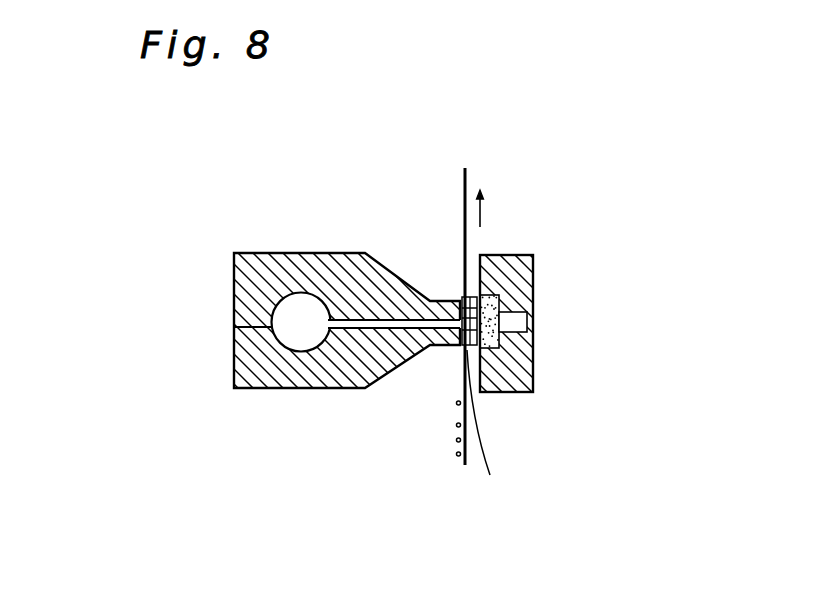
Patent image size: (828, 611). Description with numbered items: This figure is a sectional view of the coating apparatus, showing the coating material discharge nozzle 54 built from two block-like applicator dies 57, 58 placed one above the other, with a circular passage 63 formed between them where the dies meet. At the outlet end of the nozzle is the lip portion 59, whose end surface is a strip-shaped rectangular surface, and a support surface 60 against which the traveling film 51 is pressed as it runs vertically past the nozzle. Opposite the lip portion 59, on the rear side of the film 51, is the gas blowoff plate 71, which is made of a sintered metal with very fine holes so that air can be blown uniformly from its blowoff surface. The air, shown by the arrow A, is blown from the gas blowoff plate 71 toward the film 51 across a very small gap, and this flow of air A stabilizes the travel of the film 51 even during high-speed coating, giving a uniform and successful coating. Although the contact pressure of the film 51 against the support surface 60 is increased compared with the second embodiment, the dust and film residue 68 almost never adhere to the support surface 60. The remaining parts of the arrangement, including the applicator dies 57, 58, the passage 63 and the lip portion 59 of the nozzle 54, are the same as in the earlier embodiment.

The coating material discharge nozzle 54 is at (342, 328).
The block-like applicator die 57 is at (235, 277).
The block-like applicator die 58 is at (288, 380).
The circular channel 63 is at (288, 330).
The lip portion 59 is at (457, 298).
The support surface 60 is at (460, 296).
The film 51 is at (467, 172).
The gas blowoff plate 71 is at (533, 373).
The dust and film residue 68 is at (455, 455).
The flow of air A is at (487, 435).